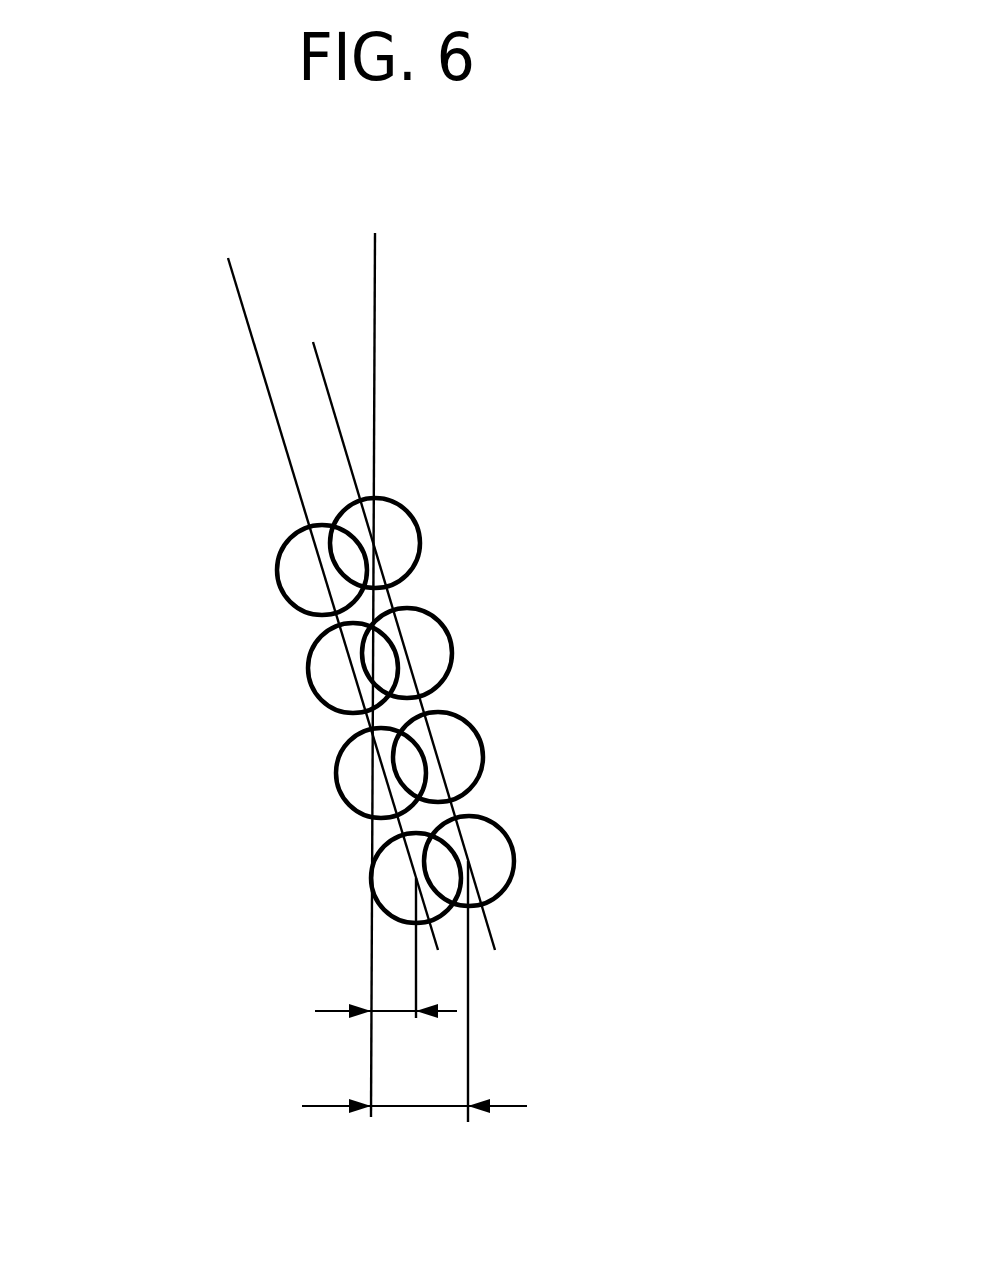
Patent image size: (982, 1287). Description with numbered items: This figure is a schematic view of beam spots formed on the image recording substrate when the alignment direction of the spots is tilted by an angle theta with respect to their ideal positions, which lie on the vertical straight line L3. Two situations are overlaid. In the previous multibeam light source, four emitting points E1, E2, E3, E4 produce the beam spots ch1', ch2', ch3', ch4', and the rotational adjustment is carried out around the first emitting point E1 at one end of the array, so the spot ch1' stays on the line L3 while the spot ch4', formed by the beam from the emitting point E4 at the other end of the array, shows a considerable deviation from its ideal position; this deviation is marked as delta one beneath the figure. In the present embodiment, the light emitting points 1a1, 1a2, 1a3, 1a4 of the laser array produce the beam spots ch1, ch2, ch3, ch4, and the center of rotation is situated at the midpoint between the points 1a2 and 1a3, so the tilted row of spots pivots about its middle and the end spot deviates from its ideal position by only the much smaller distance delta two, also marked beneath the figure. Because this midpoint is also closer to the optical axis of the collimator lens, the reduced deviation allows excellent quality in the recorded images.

The first light emitting point 1a1 is at (213, 570).
The second light emitting point 1a2 is at (240, 668).
The third light emitting point 1a3 is at (266, 773).
The n-th light emitting point 1a4 is at (300, 878).
The beam spot ch1 is at (213, 570).
The beam spot ch2 is at (240, 668).
The beam spot ch3 is at (266, 773).
The beam spot ch4 is at (300, 878).
The first emitting point E1 is at (477, 543).
The emitting point E2 is at (500, 653).
The emitting point E3 is at (537, 756).
The emitting point E4 is at (571, 861).
The beam spot ch1' is at (477, 543).
The beam spot ch2' is at (500, 653).
The beam spot ch3' is at (537, 756).
The beam spot ch4' is at (571, 861).
The straight line L3 is at (375, 400).